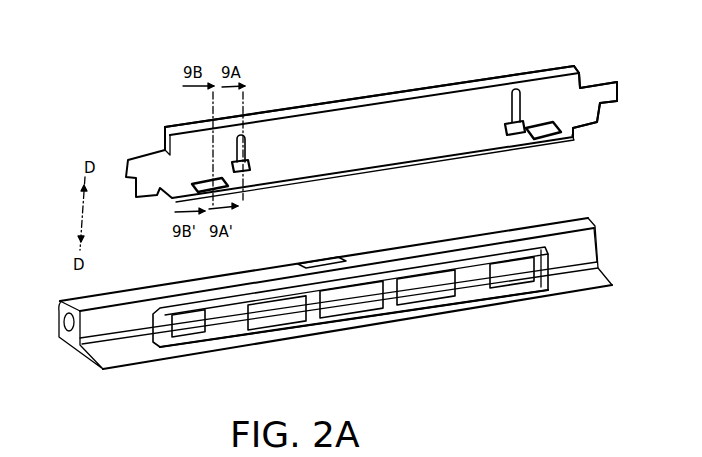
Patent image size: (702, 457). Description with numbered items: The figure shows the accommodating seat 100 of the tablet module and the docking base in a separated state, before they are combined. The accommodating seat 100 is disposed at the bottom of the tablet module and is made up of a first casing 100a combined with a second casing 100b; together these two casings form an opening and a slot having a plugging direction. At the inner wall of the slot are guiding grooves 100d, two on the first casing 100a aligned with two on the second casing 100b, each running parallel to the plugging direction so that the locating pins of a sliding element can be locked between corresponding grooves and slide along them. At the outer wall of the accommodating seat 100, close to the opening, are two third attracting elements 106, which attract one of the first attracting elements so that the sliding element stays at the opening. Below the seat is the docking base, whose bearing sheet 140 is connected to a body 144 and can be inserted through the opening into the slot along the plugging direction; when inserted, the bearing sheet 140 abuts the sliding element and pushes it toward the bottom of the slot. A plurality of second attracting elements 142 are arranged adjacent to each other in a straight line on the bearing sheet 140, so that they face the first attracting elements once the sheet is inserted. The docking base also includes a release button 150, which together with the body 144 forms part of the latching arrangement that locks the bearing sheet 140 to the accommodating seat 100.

The accommodating seat 100 is at (357, 79).
The first casing 100a is at (466, 82).
The second casing 100b is at (536, 71).
The guiding groove 100d is at (247, 153).
The third attracting element 106 is at (549, 145).
The bearing sheet 140 is at (225, 322).
The second attracting element 142 is at (363, 297).
The body 144 is at (64, 331).
The release button 150 is at (332, 259).